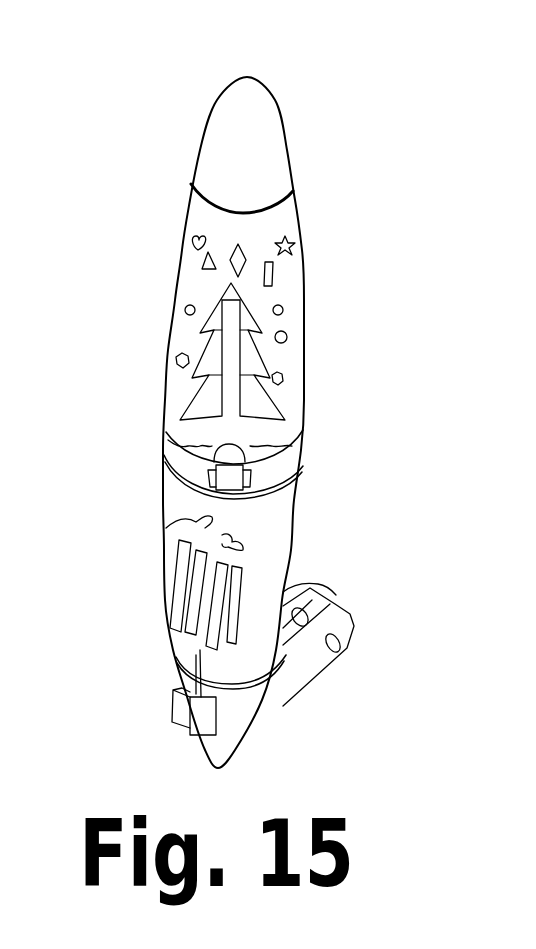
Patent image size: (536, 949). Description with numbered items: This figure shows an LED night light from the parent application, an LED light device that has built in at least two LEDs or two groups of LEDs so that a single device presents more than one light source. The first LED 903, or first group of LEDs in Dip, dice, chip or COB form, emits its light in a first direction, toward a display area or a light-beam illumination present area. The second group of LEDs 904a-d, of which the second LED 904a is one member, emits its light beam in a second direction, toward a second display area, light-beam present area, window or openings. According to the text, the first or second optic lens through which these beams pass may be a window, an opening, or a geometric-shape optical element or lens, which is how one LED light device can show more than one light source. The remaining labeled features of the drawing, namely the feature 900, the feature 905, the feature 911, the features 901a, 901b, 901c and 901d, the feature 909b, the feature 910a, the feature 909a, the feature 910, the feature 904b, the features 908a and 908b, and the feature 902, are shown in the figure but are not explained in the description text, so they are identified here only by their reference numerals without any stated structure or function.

The toy rocket 900 is at (120, 329).
The nose cone 905 is at (285, 122).
The body housing 911 is at (303, 290).
The decorative ornament (circle) 901a is at (287, 337).
The decorative ornament (heart) 901b is at (198, 236).
The decorative ornament (star) 901c is at (293, 243).
The decorative ornament (tree) 901d is at (284, 381).
The upper ring 909b is at (180, 441).
The dome cap 910a is at (262, 440).
The first LED 903 is at (260, 452).
The lower ring band 909a is at (300, 479).
The lower body section 910 is at (165, 508).
The second LED 904a is at (168, 538).
The slot b 904b is at (245, 548).
The second group of LEDs 904a-d is at (175, 621).
The fin bracket 908a is at (322, 592).
The fin hinge loops 908b is at (343, 632).
The base connector block 902 is at (178, 708).